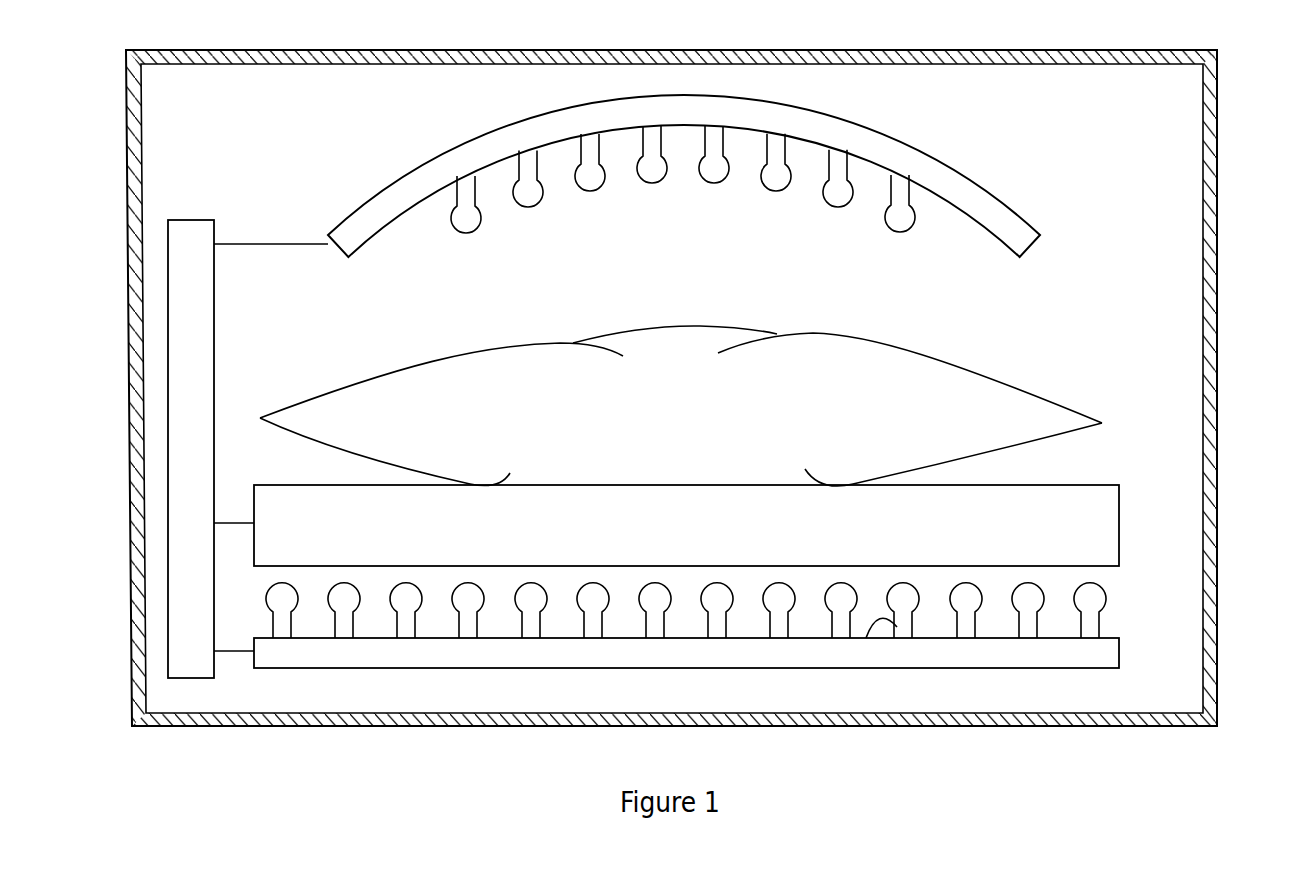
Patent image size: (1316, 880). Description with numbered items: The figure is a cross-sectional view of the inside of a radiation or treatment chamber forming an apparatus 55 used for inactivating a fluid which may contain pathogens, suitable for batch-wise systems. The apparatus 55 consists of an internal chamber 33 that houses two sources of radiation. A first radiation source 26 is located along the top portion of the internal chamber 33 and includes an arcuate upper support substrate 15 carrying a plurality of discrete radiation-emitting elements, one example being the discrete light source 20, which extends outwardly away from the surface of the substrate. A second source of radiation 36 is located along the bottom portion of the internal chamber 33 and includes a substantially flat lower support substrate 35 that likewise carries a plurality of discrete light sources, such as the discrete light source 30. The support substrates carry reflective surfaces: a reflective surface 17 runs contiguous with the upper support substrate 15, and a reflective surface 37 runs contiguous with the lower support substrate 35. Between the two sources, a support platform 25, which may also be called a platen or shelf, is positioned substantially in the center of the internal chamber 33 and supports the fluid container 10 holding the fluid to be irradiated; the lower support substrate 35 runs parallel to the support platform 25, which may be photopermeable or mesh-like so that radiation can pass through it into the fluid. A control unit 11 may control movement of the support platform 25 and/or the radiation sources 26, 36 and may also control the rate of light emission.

The fluid container 10 is at (1046, 410).
The control unit 11 is at (175, 438).
The upper support substrate 15 is at (886, 144).
The reflective surface 17 is at (810, 143).
The discrete light source 20 is at (472, 225).
The support platform 25 is at (1113, 508).
The radiation source 26 is at (1060, 232).
The discrete light source 30 is at (402, 602).
The internal chamber 33 is at (1170, 316).
The lower support substrate 35 is at (1113, 655).
The second source of radiation 36 is at (1120, 586).
The reflective surface 37 is at (897, 627).
The apparatus 55 is at (1222, 190).